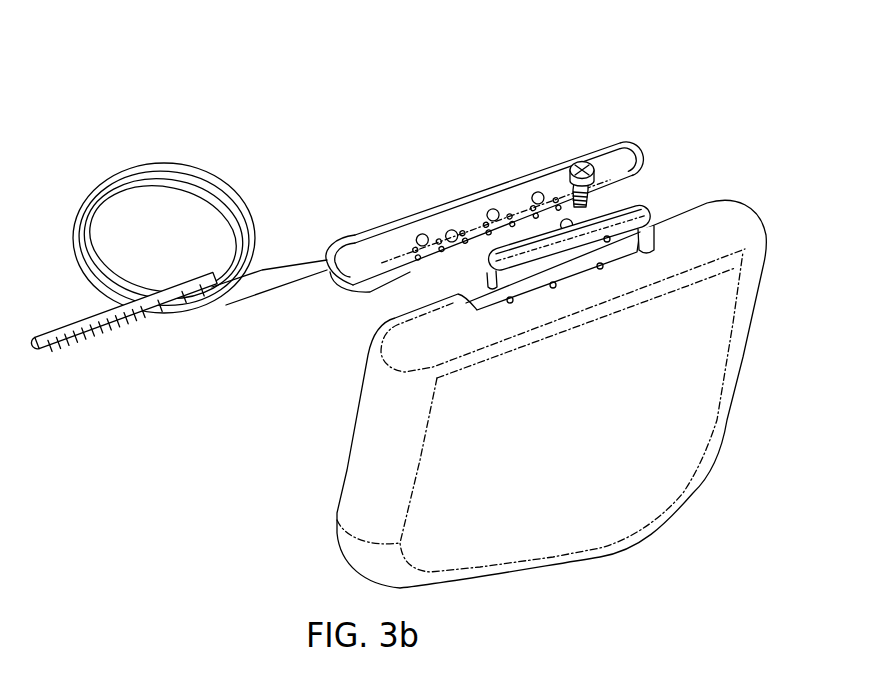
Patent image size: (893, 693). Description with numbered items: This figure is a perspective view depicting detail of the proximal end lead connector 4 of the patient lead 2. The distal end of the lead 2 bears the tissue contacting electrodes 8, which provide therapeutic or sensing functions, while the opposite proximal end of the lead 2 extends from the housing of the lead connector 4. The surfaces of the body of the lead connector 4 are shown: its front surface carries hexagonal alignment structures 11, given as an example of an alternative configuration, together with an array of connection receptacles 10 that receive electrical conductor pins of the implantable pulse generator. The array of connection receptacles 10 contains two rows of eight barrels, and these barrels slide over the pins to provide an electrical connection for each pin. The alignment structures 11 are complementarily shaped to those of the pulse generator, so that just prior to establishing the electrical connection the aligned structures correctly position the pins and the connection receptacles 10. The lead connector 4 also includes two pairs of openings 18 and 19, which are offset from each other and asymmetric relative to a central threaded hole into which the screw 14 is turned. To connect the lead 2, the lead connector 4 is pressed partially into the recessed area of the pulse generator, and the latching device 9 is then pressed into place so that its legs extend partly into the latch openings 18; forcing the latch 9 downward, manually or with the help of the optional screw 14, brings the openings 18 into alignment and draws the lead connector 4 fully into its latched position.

The patient lead 2 is at (177, 314).
The lead connector 4 is at (370, 237).
The tissue contacting electrodes 8 is at (95, 340).
The latching device 9 is at (633, 206).
The connection receptacles 10 is at (415, 268).
The alignment structures 11 is at (372, 293).
The screw 14 is at (584, 157).
The latch openings 18 is at (527, 193).
The openings 19 is at (453, 228).